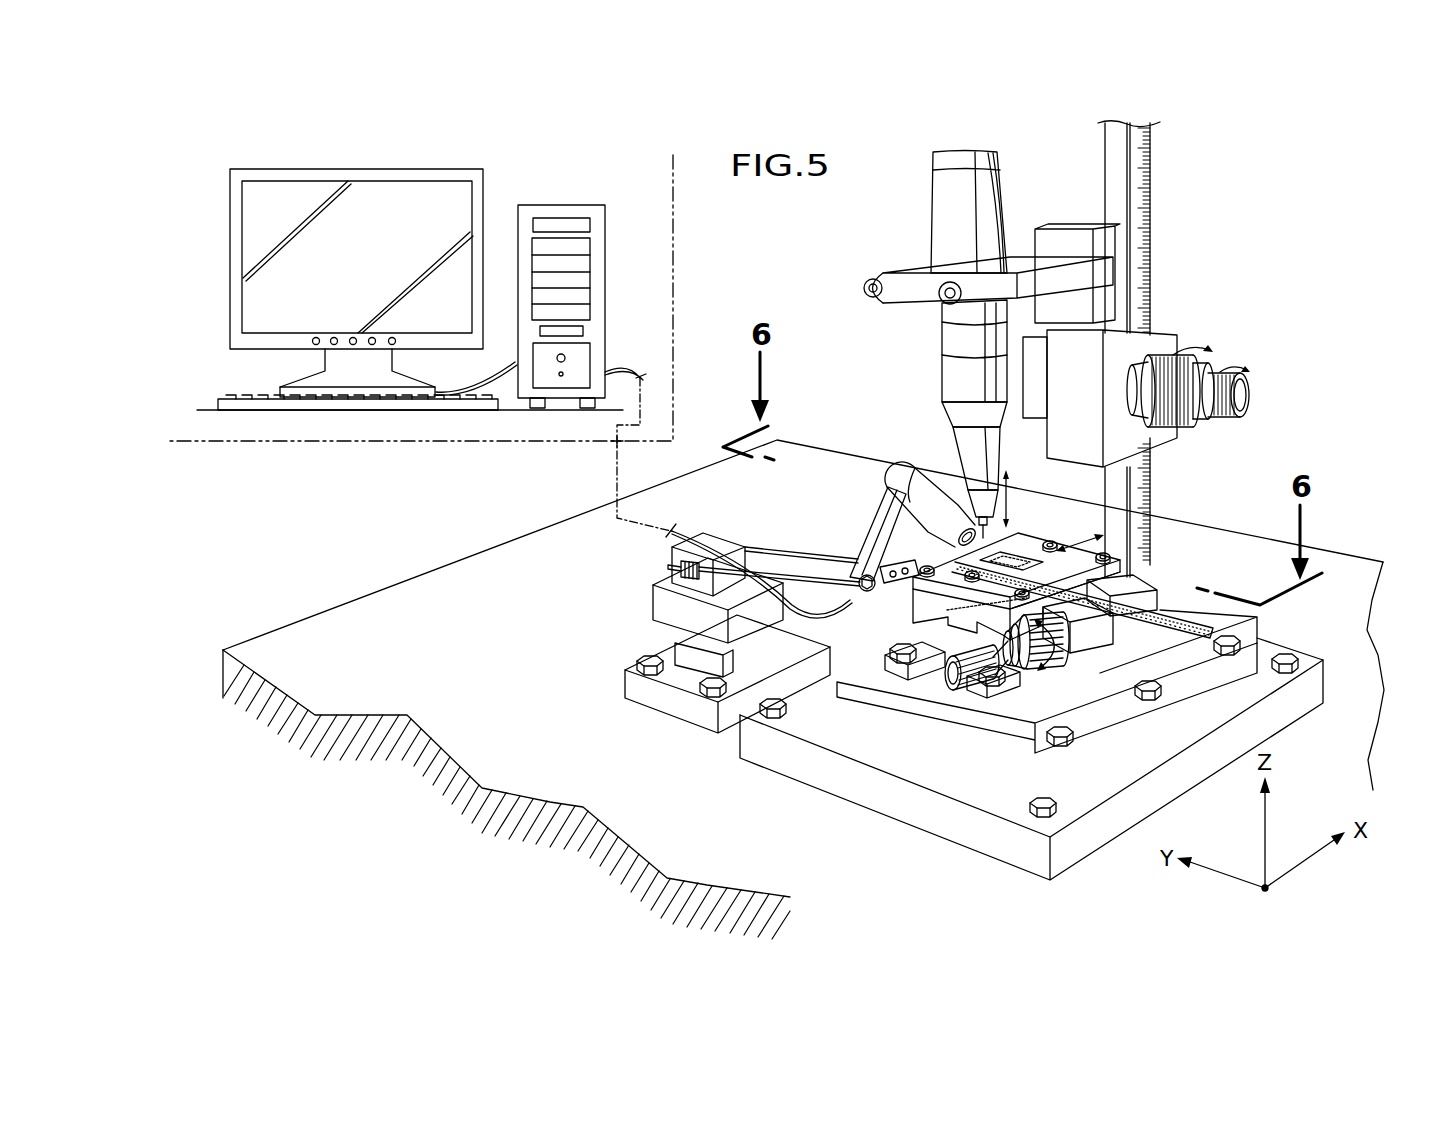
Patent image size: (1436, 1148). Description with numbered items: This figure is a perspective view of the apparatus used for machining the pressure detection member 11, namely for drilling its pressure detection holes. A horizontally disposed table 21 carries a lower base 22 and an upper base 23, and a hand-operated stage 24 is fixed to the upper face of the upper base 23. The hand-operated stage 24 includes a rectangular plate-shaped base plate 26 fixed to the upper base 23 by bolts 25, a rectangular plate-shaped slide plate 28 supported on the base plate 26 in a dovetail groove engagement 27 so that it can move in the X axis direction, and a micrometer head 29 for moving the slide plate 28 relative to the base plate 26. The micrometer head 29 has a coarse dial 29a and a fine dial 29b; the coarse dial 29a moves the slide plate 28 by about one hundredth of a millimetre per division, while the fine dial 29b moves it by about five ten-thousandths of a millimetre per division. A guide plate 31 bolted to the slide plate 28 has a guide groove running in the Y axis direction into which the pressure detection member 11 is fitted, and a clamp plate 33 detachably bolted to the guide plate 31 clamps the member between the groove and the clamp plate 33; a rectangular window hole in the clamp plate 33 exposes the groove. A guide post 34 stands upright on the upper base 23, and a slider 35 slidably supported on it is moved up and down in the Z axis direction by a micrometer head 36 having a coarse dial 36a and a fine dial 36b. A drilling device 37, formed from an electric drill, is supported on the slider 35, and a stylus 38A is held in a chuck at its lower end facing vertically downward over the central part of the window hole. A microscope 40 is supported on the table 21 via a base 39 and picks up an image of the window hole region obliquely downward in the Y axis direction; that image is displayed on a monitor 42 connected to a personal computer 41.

The pressure detection member 11 is at (1175, 616).
The table 21 is at (527, 550).
The lower base 22 is at (818, 768).
The upper base 23 is at (1013, 738).
The hand-operated stage 24 is at (1099, 668).
The bolts 25 is at (900, 662).
The base plate 26 is at (917, 637).
The dovetail groove engagement 27 is at (923, 598).
The slide plate 28 is at (873, 573).
The micrometer head 29 is at (993, 698).
The coarse dial 29a is at (1070, 650).
The fine dial 29b is at (948, 680).
The guide plate 31 is at (1142, 572).
The clamp plate 33 is at (958, 547).
The guide post 34 is at (1150, 232).
The slider 35 is at (1177, 362).
The micrometer head 36 is at (1154, 386).
The coarse dial 36a is at (1196, 428).
The fine dial 36b is at (1224, 426).
The drilling device 37 is at (942, 367).
The stylus 38A is at (992, 556).
The base 39 is at (650, 690).
The microscope 40 is at (932, 495).
The personal computer 41 is at (558, 205).
The monitor 42 is at (350, 170).